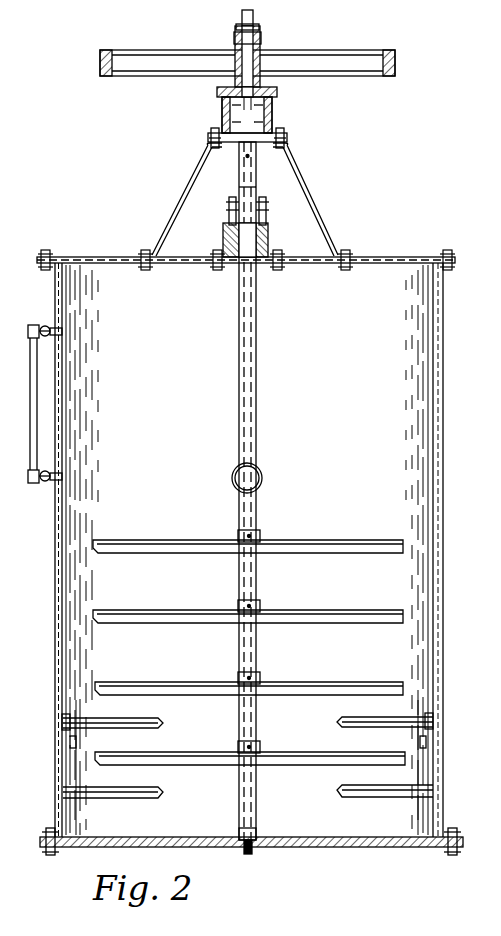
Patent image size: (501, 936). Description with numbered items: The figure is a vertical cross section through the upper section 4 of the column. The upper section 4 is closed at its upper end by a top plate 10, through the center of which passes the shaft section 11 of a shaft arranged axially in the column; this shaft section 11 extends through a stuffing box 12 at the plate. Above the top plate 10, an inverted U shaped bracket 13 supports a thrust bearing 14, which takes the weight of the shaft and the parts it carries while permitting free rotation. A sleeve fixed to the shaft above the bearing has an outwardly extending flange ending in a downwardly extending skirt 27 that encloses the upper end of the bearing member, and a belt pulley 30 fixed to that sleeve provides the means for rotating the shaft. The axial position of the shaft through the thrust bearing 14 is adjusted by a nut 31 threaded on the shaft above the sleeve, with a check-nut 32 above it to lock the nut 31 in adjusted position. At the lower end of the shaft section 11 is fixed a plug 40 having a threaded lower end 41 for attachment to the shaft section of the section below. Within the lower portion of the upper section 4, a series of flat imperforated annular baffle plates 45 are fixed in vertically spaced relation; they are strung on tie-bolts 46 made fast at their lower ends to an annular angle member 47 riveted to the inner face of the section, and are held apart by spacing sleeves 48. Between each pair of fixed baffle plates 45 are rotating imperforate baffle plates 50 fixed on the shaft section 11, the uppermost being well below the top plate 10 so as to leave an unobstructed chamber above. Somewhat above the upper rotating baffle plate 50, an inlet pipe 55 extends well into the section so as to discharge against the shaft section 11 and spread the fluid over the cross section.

The upper section 4 is at (416, 432).
The top plate 10 is at (380, 255).
The shaft section 11 is at (247, 350).
The stuffing box 12 is at (266, 240).
The inverted U shaped bracket 13 is at (318, 203).
The thrust bearing 14 is at (272, 122).
The skirt 27 is at (278, 92).
The belt pulley 30 is at (138, 60).
The nut 31 is at (262, 38).
The check-nut 32 is at (236, 27).
The plug 40 is at (33, 398).
The threaded lower end 41 is at (252, 850).
The annular baffle plates 45 is at (165, 718).
The tie-bolts 46 is at (66, 716).
The annular angle member 47 is at (76, 805).
The spacing sleeves 48 is at (73, 742).
The rotating baffle plates 50 is at (285, 540).
The inlet pipe 55 is at (262, 476).